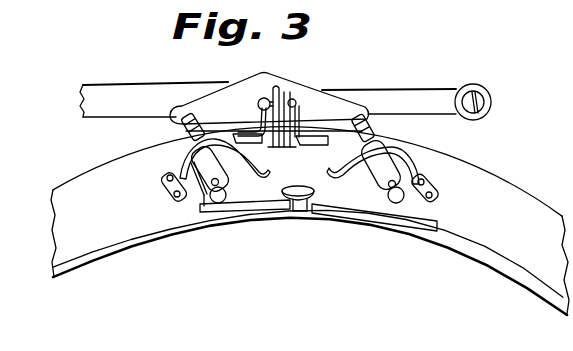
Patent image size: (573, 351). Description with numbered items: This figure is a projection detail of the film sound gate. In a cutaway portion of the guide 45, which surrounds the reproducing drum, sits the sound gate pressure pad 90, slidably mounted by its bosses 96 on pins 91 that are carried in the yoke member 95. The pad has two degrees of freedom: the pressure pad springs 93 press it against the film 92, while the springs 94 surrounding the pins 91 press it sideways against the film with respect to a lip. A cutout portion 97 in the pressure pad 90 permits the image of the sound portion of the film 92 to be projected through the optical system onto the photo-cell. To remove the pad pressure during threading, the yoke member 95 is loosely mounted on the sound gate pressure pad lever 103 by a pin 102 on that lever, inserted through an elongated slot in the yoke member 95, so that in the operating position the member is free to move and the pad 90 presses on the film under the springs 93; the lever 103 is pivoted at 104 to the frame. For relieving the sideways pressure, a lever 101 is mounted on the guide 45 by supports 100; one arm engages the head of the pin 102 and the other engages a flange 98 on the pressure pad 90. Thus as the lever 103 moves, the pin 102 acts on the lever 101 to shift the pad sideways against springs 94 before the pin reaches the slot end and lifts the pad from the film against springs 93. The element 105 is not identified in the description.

The guide 45 is at (158, 238).
The sound gate pressure pad 90 is at (245, 182).
The pins 91 is at (219, 204).
The film 92 is at (300, 213).
The pressure pad springs 93 is at (184, 162).
The springs 94 is at (183, 127).
The yoke member 95 is at (269, 102).
The bosses 96 is at (223, 182).
The cutout portion 97 is at (304, 185).
The flange 98 is at (278, 148).
The supports 100 is at (262, 116).
The lever 101 is at (281, 95).
The pin 102 is at (259, 102).
The sound gate pressure pad lever 103 is at (154, 99).
The pivot 104 is at (486, 103).
The base plate 105 is at (282, 213).